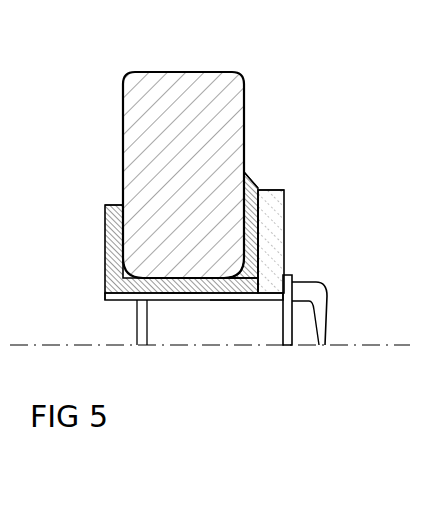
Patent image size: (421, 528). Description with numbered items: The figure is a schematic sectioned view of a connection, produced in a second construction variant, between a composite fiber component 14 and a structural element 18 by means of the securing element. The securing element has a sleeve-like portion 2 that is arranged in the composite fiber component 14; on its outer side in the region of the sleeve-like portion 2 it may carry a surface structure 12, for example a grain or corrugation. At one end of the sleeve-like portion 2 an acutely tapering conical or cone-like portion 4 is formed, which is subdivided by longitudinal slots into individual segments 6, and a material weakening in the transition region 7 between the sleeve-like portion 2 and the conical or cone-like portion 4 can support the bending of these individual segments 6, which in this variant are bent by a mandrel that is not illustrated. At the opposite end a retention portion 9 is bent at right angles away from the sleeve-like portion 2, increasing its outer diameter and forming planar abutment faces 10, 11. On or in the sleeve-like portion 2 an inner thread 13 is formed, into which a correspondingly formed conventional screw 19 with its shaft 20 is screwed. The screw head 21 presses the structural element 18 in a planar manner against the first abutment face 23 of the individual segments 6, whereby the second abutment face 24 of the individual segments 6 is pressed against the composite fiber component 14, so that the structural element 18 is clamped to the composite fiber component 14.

The composite fiber component 14 is at (183, 80).
The first abutment face 10 is at (101, 262).
The retention portion 9 is at (104, 204).
The second abutment face 11 is at (125, 232).
The inner thread 13 is at (105, 298).
The surface structure 12 is at (150, 276).
The screw 19 is at (170, 336).
The sleeve-like portion 2 is at (176, 288).
The shaft 20 is at (227, 335).
The transition region 7 is at (245, 283).
The conical or cone-like portion 4 is at (255, 183).
The individual segments 6 is at (251, 180).
The structural element 18 is at (268, 237).
The second abutment face 24 is at (272, 191).
The first abutment face 23 is at (262, 245).
The screw head 21 is at (308, 320).